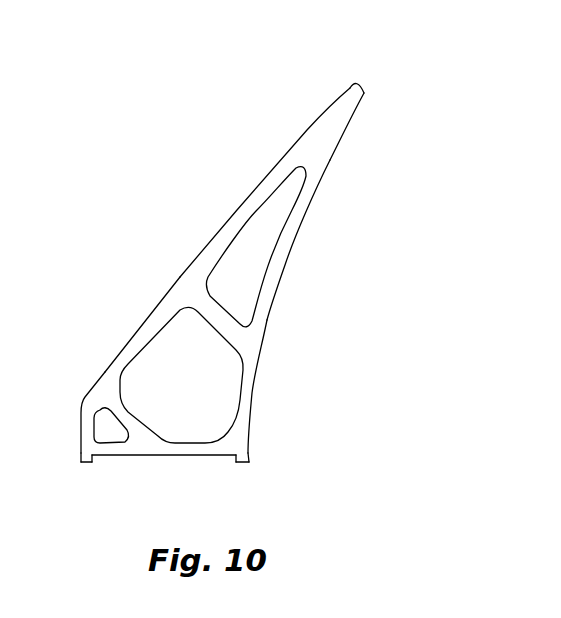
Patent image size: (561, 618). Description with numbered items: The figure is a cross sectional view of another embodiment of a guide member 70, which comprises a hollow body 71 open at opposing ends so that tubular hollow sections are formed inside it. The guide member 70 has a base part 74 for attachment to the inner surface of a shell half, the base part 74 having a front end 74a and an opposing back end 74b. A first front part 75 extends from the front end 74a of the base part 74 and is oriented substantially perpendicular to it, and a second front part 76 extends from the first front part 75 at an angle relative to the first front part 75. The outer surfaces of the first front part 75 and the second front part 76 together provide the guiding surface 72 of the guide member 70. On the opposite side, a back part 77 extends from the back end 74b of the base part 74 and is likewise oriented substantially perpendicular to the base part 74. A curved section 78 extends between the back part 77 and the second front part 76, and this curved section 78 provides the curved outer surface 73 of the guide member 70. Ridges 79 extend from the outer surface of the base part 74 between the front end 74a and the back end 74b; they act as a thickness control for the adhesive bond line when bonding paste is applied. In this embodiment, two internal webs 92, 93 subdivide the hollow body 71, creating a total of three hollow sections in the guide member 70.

The guide member 70 is at (162, 182).
The hollow body 71 is at (283, 251).
The guiding surface 72 is at (200, 253).
The curved outer surface 73 is at (357, 82).
The base part 74 is at (173, 455).
The front end 74a is at (80, 455).
The back end 74b is at (240, 447).
The first front part 75 is at (80, 446).
The second front part 76 is at (133, 338).
The back part 77 is at (251, 393).
The curved section 78 is at (352, 102).
The ridges 79 is at (86, 464).
The internal web 92 is at (130, 418).
The internal web 93 is at (218, 315).